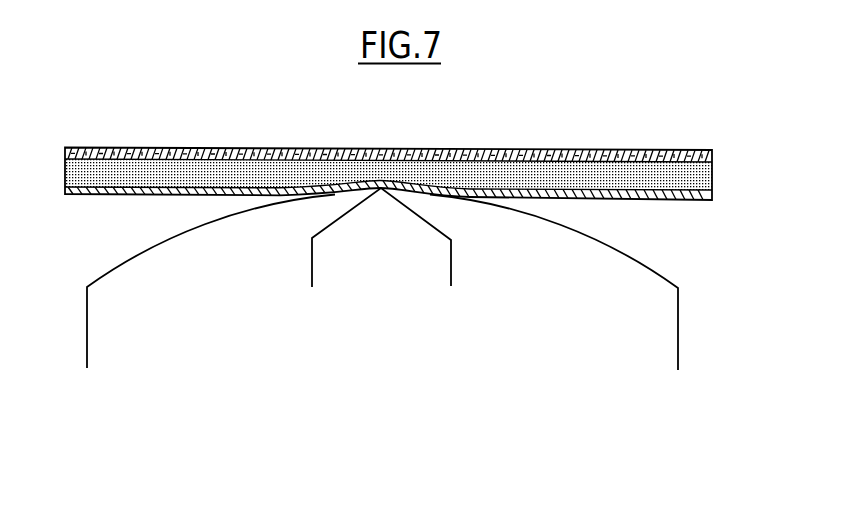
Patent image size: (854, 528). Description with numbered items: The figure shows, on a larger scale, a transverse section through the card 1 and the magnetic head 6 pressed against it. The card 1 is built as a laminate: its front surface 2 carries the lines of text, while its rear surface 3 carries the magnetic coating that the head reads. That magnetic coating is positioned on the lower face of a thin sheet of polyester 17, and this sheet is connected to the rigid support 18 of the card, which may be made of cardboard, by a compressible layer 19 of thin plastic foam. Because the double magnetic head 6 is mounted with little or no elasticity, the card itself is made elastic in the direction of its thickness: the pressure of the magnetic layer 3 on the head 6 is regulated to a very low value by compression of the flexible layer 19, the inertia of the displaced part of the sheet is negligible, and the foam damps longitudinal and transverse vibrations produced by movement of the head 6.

The card 1 is at (62, 139).
The front surface 2 is at (123, 149).
The rear surface 3 is at (128, 193).
The double magnetic head 6 is at (607, 260).
The thin sheet of polyester 17 is at (688, 199).
The rigid support 18 is at (599, 155).
The compressible layer 19 is at (645, 170).